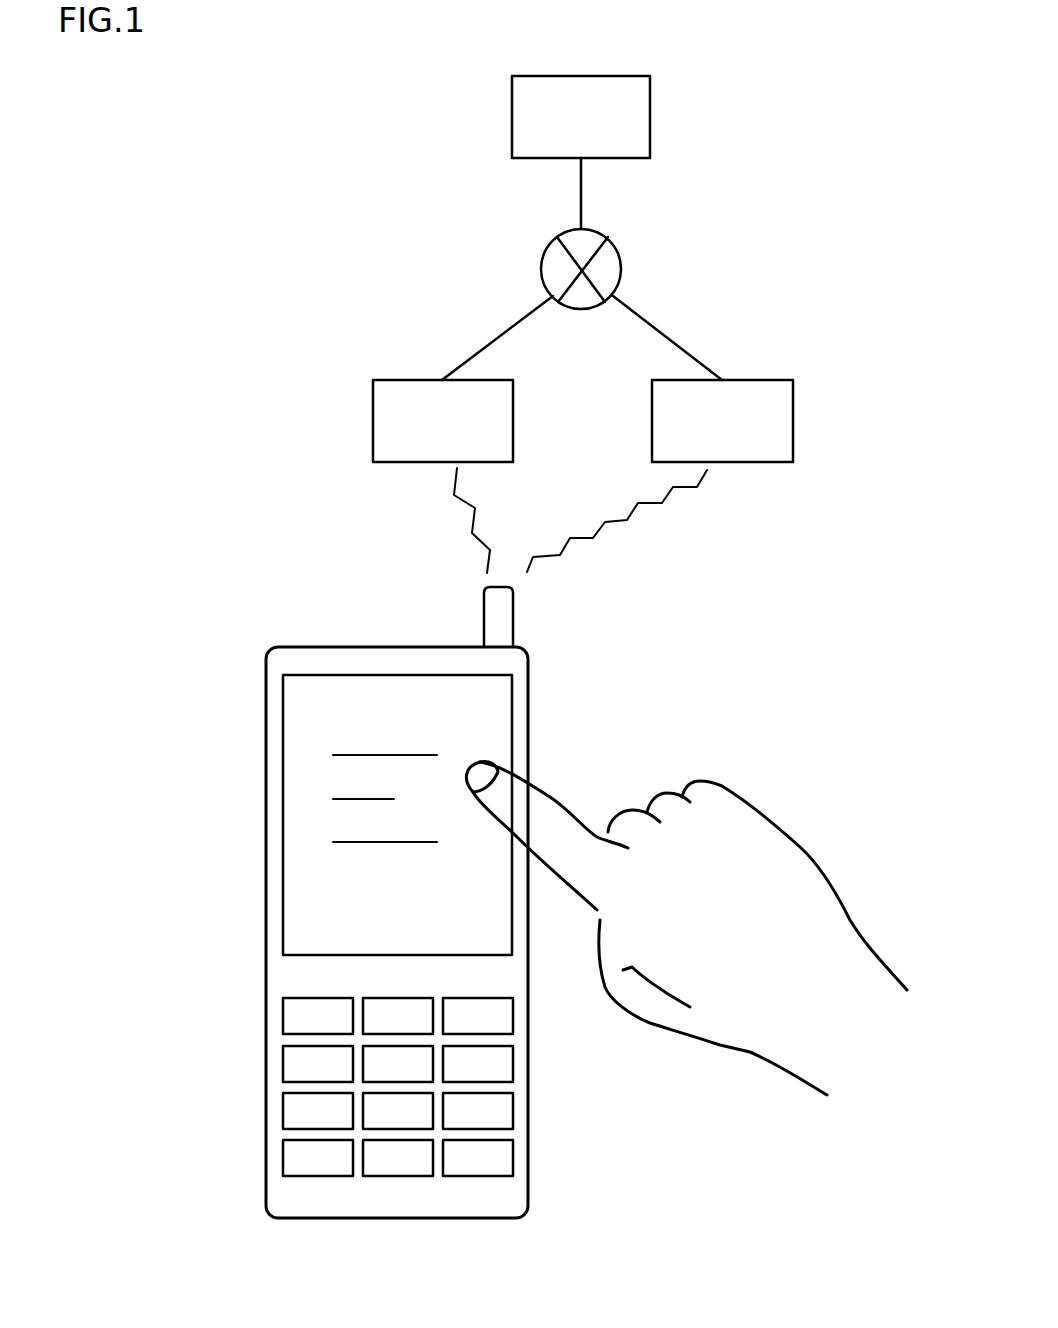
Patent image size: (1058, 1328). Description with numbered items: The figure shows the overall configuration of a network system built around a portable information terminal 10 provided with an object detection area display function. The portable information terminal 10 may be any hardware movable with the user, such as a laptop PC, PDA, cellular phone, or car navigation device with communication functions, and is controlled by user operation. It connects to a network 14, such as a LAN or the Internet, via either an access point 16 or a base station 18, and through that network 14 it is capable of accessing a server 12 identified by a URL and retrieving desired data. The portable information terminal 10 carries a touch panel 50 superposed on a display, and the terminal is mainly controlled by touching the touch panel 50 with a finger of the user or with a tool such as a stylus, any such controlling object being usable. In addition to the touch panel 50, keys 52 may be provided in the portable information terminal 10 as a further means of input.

The portable information terminal 10 is at (362, 902).
The server 12 is at (650, 112).
The network 14 is at (622, 266).
The access point 16 is at (410, 378).
The base station 18 is at (757, 378).
The touch panel 50 is at (293, 812).
The keys 52 is at (354, 1086).